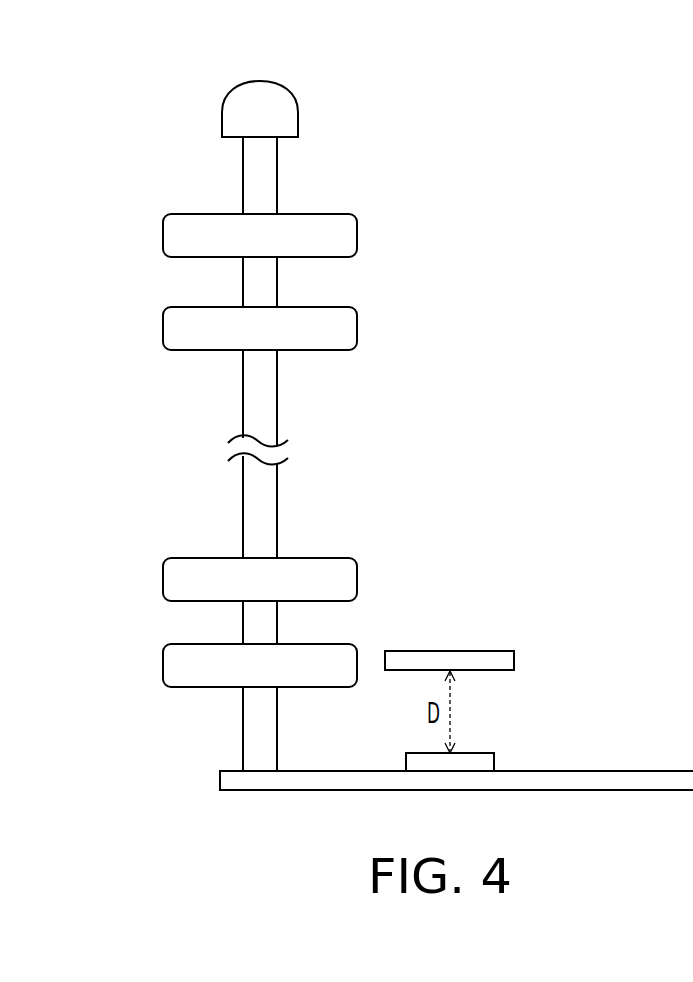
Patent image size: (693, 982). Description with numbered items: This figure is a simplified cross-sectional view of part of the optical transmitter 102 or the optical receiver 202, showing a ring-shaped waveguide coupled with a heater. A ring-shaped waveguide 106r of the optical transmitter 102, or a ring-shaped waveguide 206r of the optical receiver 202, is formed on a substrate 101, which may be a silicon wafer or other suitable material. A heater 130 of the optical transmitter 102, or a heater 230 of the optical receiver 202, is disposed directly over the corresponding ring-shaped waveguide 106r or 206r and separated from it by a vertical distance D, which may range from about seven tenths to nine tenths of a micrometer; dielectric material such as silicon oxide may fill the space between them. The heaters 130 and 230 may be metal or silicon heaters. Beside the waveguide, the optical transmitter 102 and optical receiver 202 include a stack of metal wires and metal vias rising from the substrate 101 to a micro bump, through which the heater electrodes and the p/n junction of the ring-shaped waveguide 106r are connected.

The optical transmitter 102 is at (230, 401).
The optical receiver 202 is at (285, 426).
The substrate 101 is at (308, 790).
The heater 130 is at (486, 629).
The heater 230 is at (487, 651).
The ring-shaped waveguide 106r is at (533, 739).
The ring-shaped waveguide 206r is at (482, 753).